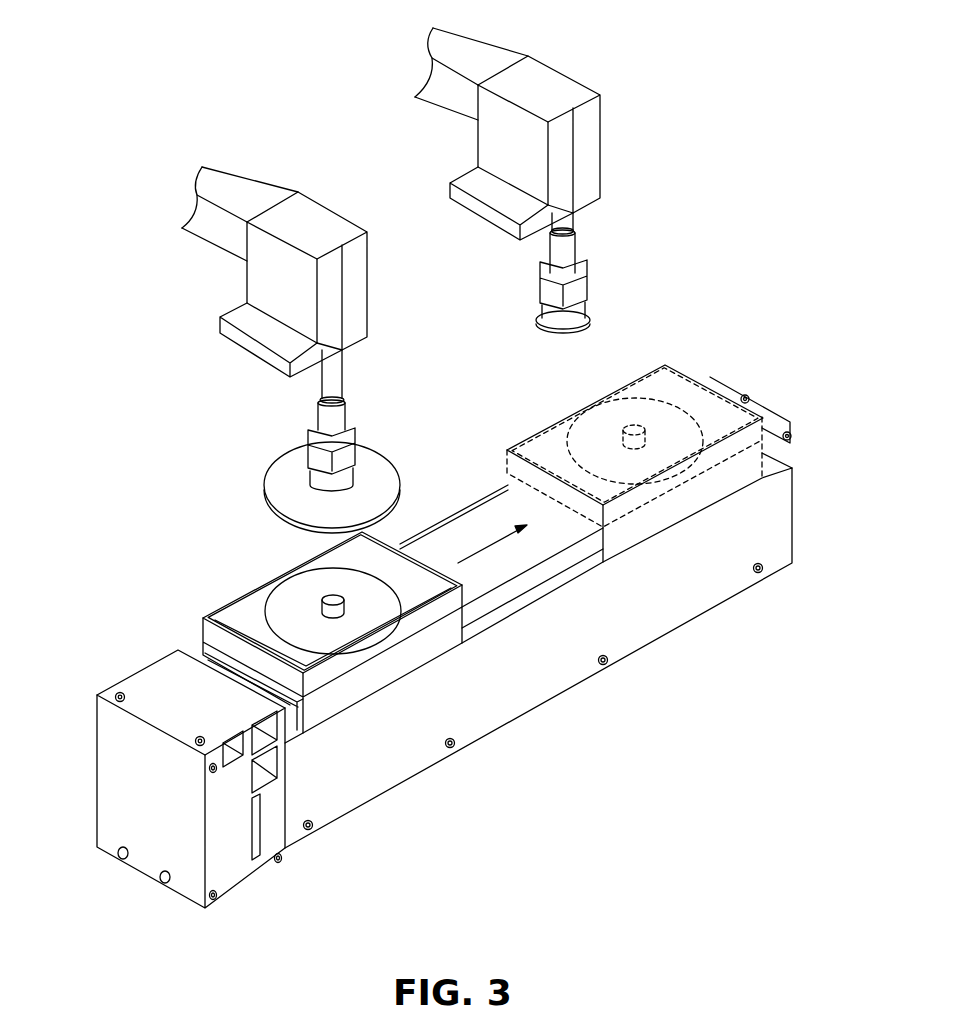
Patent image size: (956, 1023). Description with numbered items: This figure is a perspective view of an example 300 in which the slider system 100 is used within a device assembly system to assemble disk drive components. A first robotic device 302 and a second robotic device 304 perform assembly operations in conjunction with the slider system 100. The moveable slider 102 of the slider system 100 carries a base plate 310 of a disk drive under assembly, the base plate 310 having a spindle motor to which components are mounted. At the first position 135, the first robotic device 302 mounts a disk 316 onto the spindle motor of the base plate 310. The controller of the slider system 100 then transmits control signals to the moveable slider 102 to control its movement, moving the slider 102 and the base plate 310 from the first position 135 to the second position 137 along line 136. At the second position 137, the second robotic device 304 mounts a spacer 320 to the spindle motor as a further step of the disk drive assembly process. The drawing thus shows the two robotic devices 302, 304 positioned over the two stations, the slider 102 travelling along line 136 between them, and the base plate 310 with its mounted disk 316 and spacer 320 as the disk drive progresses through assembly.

The example 300 is at (386, 259).
The first robotic device 302 is at (322, 218).
The second robotic device 304 is at (540, 180).
The spacer 320 is at (593, 317).
The disk 316 is at (277, 475).
The base plate 310 is at (332, 622).
The first position 135 is at (301, 622).
The second position 137 is at (537, 395).
The line 136 is at (483, 550).
The moveable slider 102 is at (357, 680).
The slider system 100 is at (148, 910).